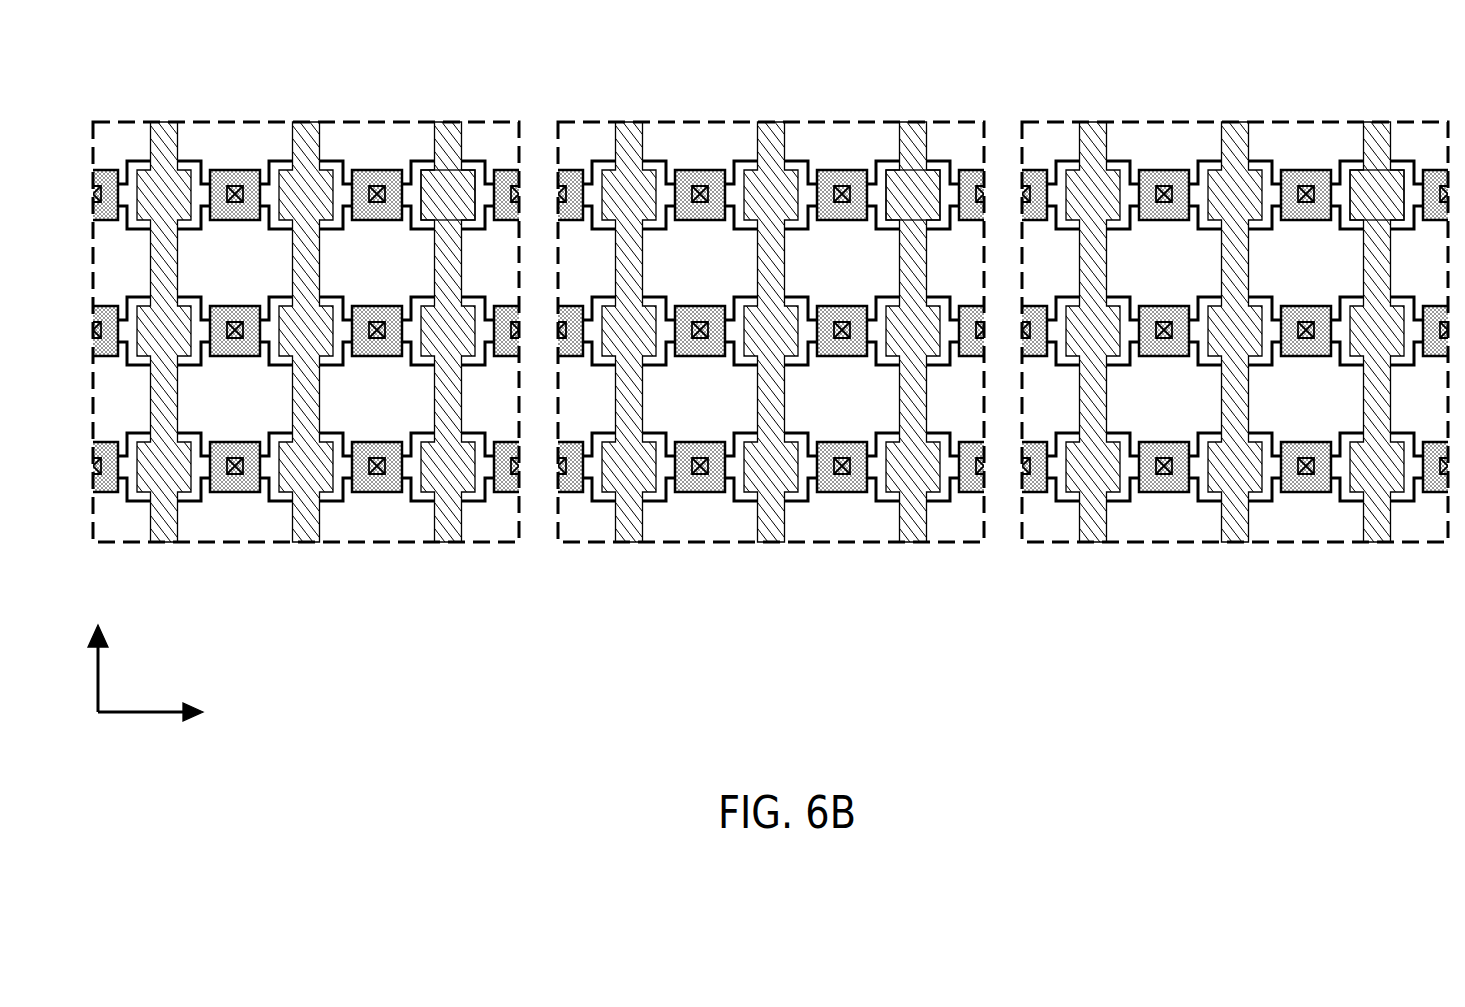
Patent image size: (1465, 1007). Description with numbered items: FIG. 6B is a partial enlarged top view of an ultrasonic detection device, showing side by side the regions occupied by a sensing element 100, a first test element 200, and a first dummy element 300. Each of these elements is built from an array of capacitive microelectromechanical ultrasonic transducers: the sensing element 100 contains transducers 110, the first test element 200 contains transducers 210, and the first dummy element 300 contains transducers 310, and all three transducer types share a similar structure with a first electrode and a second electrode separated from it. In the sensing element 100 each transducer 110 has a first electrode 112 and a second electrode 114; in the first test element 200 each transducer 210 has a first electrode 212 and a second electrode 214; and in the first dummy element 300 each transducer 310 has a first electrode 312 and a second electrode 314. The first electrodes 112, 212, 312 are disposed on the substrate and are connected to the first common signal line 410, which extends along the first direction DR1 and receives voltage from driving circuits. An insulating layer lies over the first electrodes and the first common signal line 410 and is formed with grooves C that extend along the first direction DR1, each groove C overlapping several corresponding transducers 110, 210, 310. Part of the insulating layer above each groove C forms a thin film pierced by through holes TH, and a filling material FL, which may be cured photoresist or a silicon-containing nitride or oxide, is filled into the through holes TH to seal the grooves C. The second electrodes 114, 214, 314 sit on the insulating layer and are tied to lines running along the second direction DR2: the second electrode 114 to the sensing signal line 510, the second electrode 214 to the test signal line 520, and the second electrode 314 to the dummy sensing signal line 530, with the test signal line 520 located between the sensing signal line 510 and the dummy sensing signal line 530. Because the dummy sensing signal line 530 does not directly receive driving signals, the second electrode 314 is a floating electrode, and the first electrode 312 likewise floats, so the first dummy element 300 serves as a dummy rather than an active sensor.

The sensing element 100 is at (1249, 318).
The first test element 200 is at (785, 318).
The first dummy element 300 is at (320, 318).
The capacitive microelectromechanical ultrasonic transducer 110 is at (1390, 259).
The first electrode 112 is at (1349, 160).
The second electrode 114 is at (1397, 182).
The capacitive microelectromechanical ultrasonic transducer 210 is at (926, 259).
The first electrode 212 is at (885, 160).
The second electrode 214 is at (933, 182).
The capacitive microelectromechanical ultrasonic transducer 310 is at (461, 259).
The first electrode 312 is at (420, 160).
The second electrode 314 is at (468, 182).
The first common signal line 410 is at (337, 140).
The sensing signal line 510 is at (1377, 530).
The test signal line 520 is at (913, 530).
The dummy sensing signal line 530 is at (448, 530).
The through hole TH is at (235, 186).
The filling material FL is at (249, 170).
The groove C is at (480, 502).
The first direction DR1 is at (153, 733).
The second direction DR2 is at (101, 649).